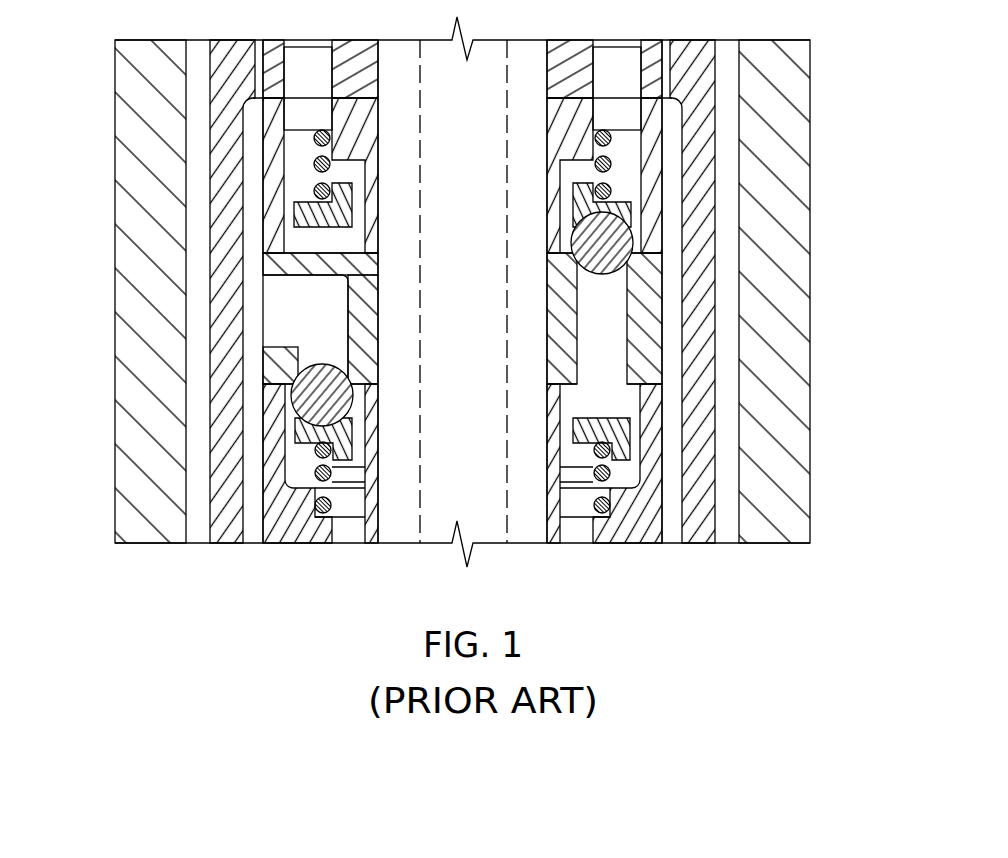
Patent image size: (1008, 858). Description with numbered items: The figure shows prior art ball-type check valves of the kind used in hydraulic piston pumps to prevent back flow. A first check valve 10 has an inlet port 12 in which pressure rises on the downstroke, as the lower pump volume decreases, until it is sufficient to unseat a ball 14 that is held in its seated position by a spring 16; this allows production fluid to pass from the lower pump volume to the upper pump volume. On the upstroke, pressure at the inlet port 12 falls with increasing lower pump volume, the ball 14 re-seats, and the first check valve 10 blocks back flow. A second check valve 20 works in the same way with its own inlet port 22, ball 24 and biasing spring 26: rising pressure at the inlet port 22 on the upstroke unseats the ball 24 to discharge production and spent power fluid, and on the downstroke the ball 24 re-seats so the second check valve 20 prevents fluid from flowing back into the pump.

The first check valve 10 is at (90, 238).
The inlet port 12 is at (298, 276).
The ball 14 is at (290, 397).
The spring 16 is at (317, 474).
The second check valve 20 is at (750, 88).
The inlet port 22 is at (626, 294).
The ball 24 is at (632, 243).
The spring 26 is at (608, 163).